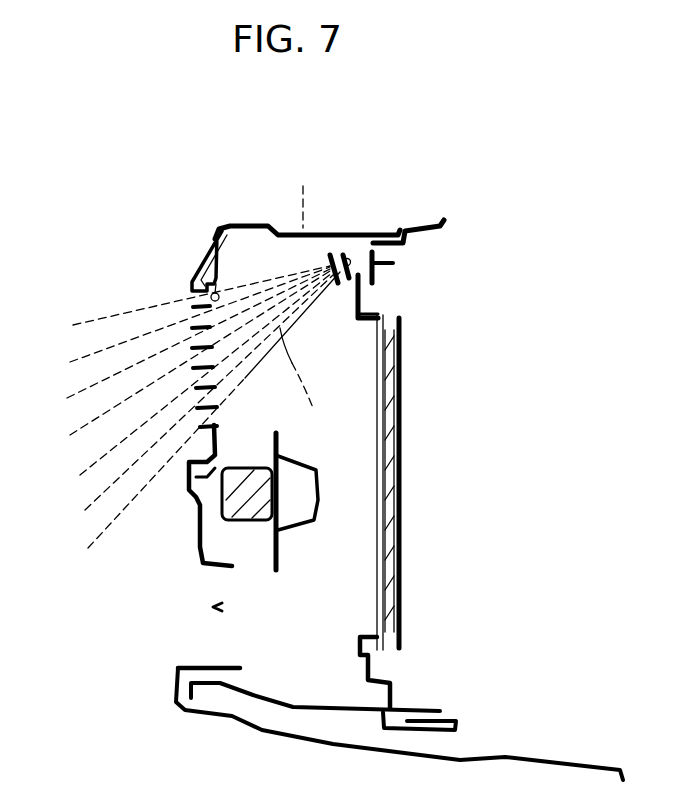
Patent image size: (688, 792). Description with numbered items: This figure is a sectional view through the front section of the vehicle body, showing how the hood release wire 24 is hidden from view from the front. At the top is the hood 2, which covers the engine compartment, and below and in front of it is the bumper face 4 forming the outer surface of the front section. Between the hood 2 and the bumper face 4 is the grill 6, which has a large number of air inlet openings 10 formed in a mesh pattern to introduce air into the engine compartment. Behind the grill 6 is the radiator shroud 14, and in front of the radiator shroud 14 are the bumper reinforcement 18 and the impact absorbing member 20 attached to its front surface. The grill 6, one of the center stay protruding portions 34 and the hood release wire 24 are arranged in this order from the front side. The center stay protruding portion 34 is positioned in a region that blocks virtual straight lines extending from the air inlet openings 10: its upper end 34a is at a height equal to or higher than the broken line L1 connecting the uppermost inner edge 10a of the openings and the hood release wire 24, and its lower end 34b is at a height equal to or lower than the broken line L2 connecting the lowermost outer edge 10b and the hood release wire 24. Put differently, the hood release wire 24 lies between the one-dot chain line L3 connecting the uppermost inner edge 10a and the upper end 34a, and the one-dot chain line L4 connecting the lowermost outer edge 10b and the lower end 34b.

The hood 2 is at (283, 226).
The bumper face 4 is at (202, 508).
The grill 6 is at (201, 345).
The air inlet openings 10 is at (190, 322).
The uppermost inner edge 10a is at (212, 272).
The lowermost outer edge 10b is at (213, 425).
The radiator shroud 14 is at (439, 230).
The bumper reinforcement 18 is at (268, 555).
The impact absorbing member 20 is at (190, 528).
The hood release wire 24 is at (352, 260).
The center stay protruding portion 34 is at (402, 254).
The upper end 34a is at (345, 254).
The lower end 34b is at (343, 283).
The broken line L1 is at (186, 307).
The broken line L2 is at (199, 426).
The one-dot chain line L3 is at (294, 190).
The one-dot chain line L4 is at (306, 388).